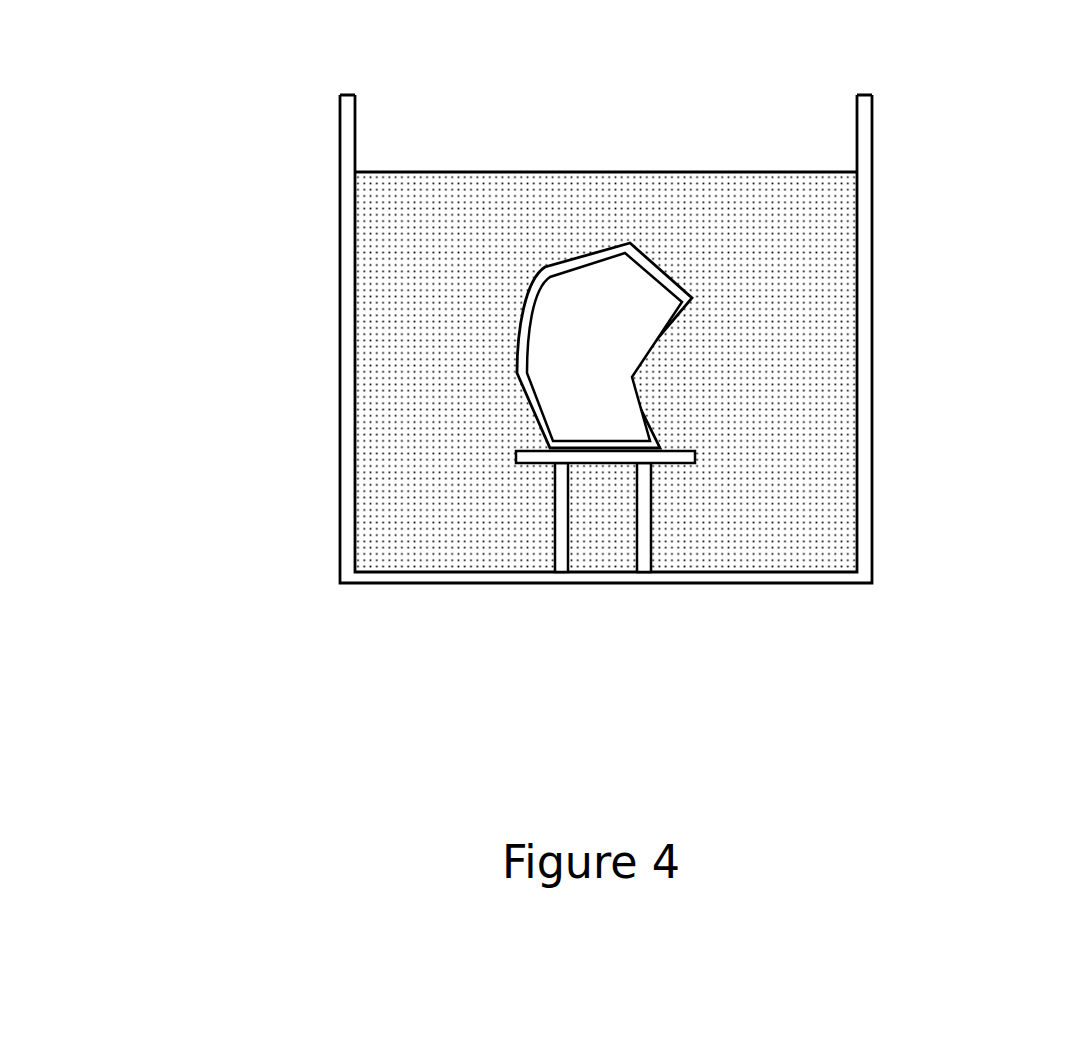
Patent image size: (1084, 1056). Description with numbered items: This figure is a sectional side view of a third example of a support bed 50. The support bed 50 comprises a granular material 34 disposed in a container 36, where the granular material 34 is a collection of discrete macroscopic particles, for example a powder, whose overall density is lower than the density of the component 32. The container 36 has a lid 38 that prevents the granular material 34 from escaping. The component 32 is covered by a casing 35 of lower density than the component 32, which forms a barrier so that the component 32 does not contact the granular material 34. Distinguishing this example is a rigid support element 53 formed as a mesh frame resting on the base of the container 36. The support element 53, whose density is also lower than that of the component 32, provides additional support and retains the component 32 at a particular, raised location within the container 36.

The support bed 50 is at (162, 127).
The container 36 is at (338, 125).
The lid 38 is at (558, 173).
The granular material 34 is at (828, 457).
The casing 35 is at (672, 322).
The component 32 is at (604, 347).
The support element 53 is at (650, 517).